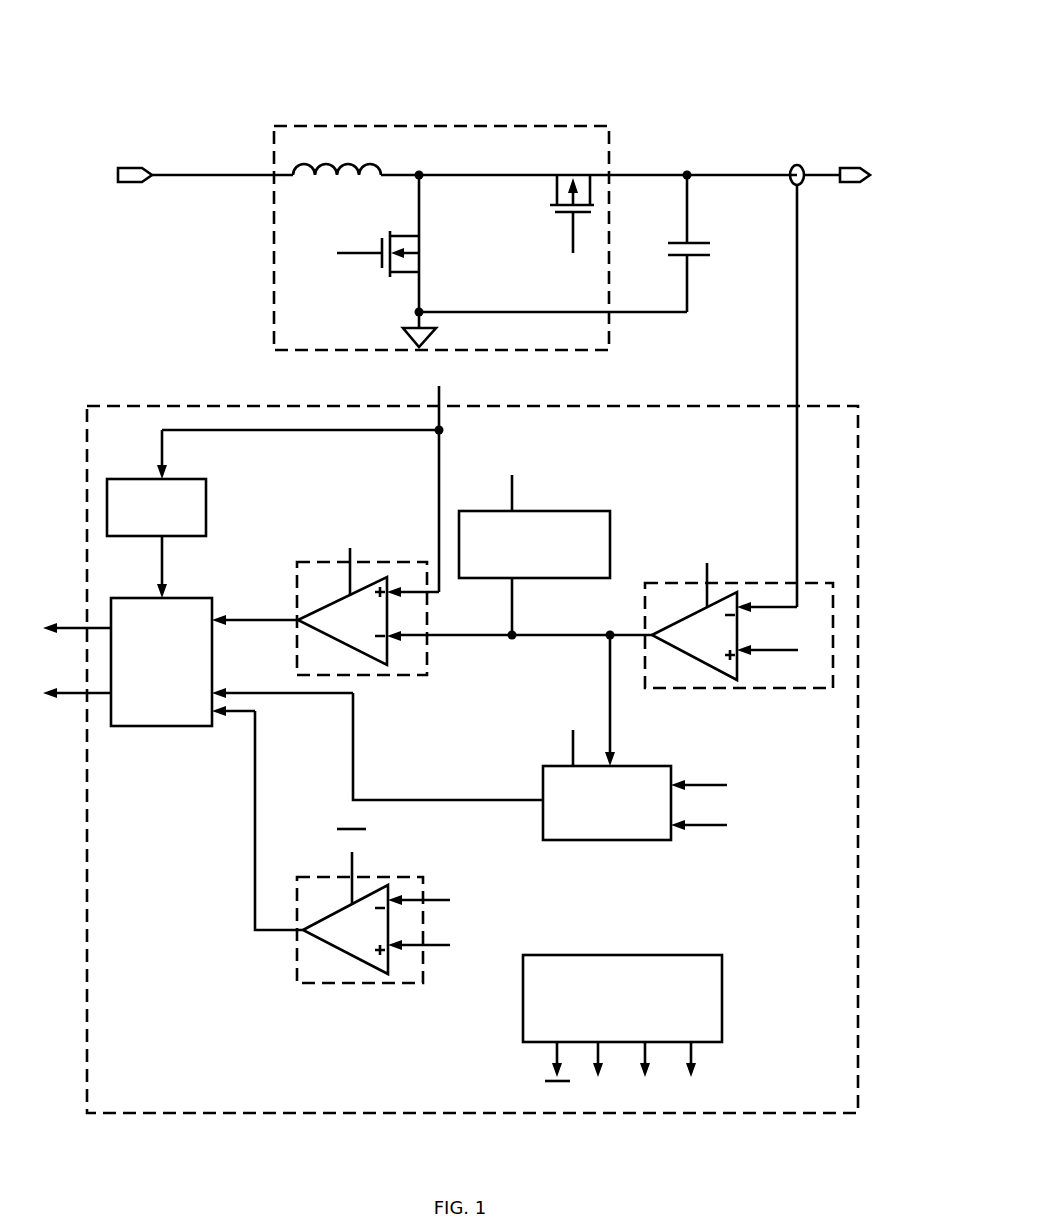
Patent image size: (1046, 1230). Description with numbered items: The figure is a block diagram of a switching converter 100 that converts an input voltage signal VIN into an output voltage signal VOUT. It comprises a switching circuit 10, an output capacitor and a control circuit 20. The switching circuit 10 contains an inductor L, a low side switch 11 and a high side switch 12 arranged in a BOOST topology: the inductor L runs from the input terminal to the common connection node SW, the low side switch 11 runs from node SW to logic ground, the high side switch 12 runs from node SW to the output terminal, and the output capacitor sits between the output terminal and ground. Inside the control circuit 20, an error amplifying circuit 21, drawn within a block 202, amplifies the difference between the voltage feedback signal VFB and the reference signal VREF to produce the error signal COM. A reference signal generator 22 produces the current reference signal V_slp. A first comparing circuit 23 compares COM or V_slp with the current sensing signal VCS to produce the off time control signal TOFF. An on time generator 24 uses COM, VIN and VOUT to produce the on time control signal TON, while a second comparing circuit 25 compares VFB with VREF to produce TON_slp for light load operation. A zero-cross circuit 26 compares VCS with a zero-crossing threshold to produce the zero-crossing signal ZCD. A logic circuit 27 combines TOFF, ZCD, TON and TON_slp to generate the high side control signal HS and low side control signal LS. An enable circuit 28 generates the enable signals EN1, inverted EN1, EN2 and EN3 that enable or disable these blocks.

The switching converter 100 is at (710, 72).
The switching circuit 10 is at (545, 126).
The low side switch 11 is at (425, 258).
The high side switch 12 is at (547, 196).
The control circuit 20 is at (685, 405).
The error amplifying circuit 21 is at (752, 583).
The error amplifier unit 202 is at (765, 688).
The reference signal generator 22 is at (535, 511).
The first comparing circuit 23 is at (393, 561).
The on time generator 24 is at (635, 766).
The second comparing circuit 25 is at (415, 877).
The zero-cross circuit 26 is at (206, 497).
The logic circuit 27 is at (176, 727).
The enable circuit 28 is at (722, 976).